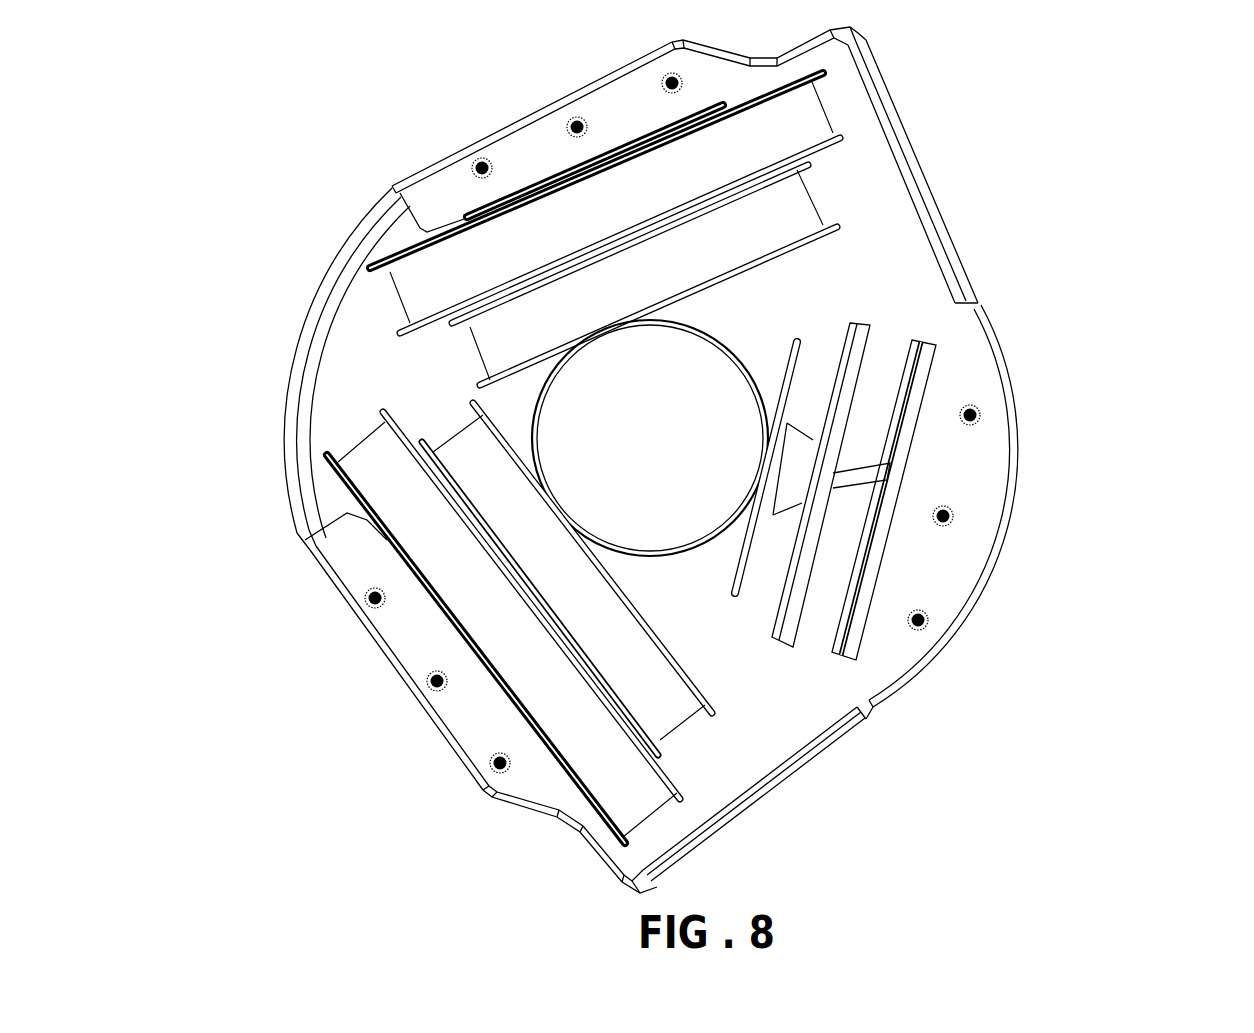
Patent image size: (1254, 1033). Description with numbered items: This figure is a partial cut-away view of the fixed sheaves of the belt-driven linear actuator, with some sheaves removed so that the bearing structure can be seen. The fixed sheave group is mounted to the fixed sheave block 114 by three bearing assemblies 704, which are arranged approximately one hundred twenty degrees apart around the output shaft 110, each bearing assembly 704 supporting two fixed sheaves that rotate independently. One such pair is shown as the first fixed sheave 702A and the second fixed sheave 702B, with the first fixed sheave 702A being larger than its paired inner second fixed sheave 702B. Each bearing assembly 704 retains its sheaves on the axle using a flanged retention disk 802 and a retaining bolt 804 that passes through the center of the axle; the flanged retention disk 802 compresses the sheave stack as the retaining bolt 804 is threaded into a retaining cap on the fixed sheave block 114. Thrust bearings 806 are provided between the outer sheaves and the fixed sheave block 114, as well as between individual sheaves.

The bearing assembly 704 is at (537, 97).
The thrust bearings 806 is at (855, 375).
The flanged retention disk 802 is at (800, 448).
The output shaft 110 is at (671, 471).
The fixed sheave 2 702B is at (520, 497).
The fixed sheave 1 702A is at (490, 618).
The retaining bolt 804 is at (865, 497).
The fixed sheave block 114 is at (887, 703).